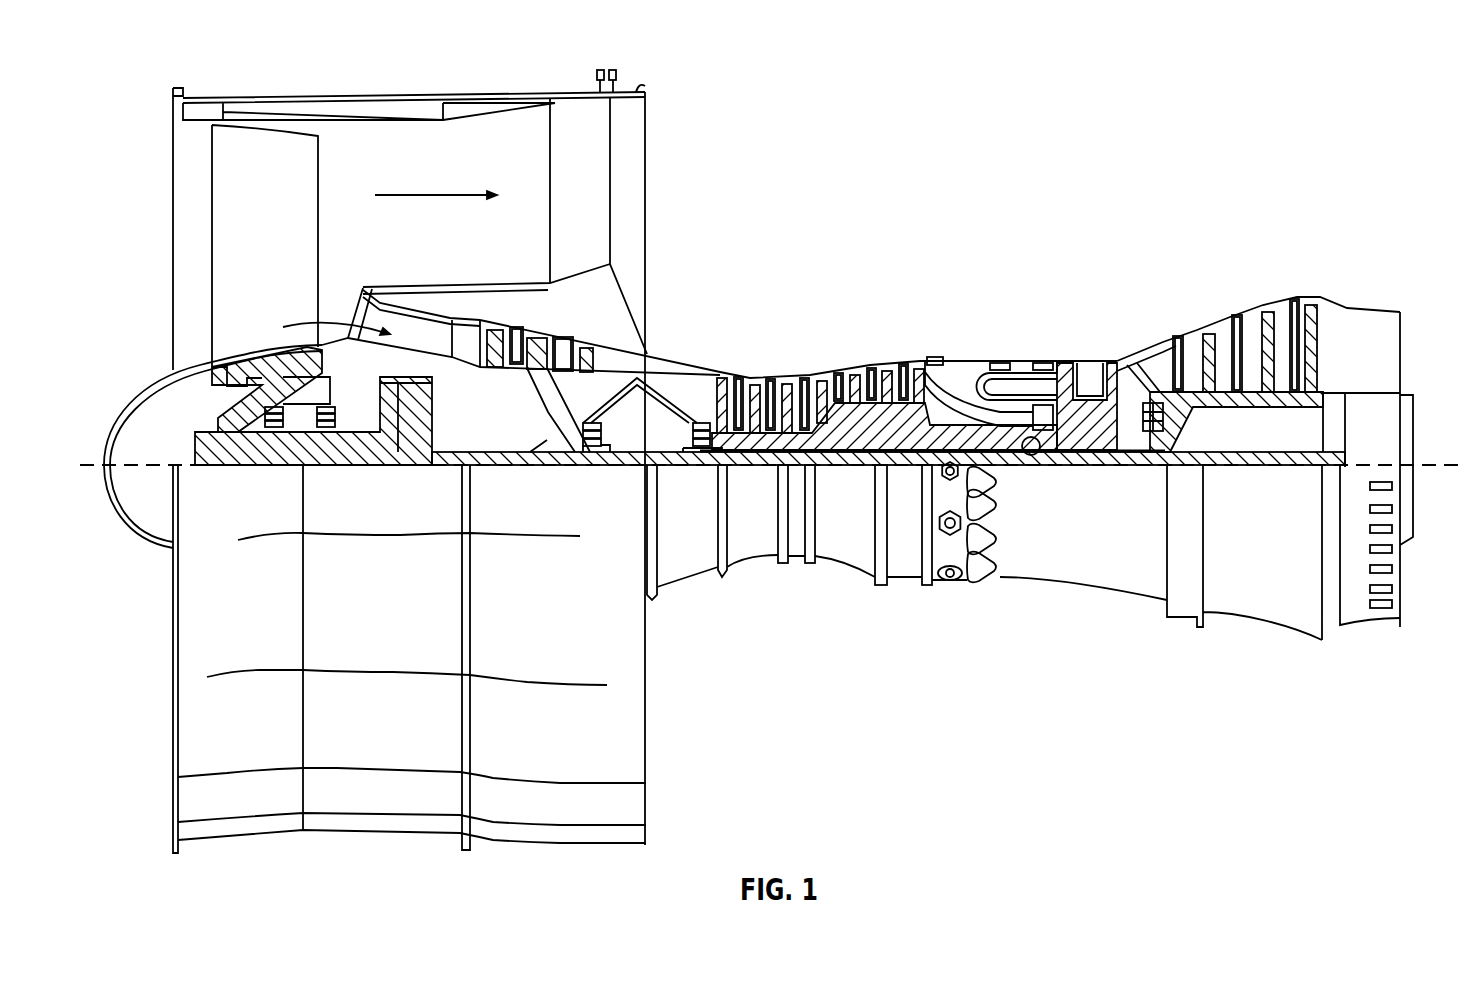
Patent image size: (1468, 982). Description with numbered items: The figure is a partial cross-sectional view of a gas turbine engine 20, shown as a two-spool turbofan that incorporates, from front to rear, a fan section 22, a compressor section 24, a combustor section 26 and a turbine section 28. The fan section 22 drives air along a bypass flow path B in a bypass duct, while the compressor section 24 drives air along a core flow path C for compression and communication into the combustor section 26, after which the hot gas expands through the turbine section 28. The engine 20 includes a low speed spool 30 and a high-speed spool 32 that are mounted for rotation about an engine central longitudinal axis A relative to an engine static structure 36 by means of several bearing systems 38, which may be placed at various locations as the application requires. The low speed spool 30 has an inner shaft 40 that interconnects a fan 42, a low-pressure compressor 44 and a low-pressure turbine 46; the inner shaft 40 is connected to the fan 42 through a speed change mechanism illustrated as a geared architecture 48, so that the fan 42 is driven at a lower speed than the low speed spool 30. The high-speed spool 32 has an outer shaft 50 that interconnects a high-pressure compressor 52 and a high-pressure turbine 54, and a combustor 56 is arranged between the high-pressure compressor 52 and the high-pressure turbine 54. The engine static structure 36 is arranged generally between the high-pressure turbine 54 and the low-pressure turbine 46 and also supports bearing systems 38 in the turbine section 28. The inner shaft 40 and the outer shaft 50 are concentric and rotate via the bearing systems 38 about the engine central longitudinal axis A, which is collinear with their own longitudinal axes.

The gas turbine engine 20 is at (1220, 134).
The fan section 22 is at (278, 100).
The compressor section 24 is at (836, 236).
The combustor section 26 is at (1004, 238).
The turbine section 28 is at (1148, 236).
The low speed spool 30 is at (868, 466).
The high-speed spool 32 is at (917, 400).
The engine static structure 36 is at (908, 583).
The bearing systems 38 is at (268, 430).
The inner shaft 40 is at (660, 460).
The fan 42 is at (292, 229).
The low-pressure compressor 44 is at (562, 342).
The low-pressure turbine 46 is at (1255, 332).
The geared architecture 48 is at (409, 430).
The outer shaft 50 is at (1028, 450).
The high-pressure compressor 52 is at (827, 432).
The high-pressure turbine 54 is at (1085, 362).
The combustor 56 is at (1012, 385).
The engine central longitudinal axis A is at (1420, 463).
The bypass flow path B is at (437, 194).
The core flow path C is at (297, 322).